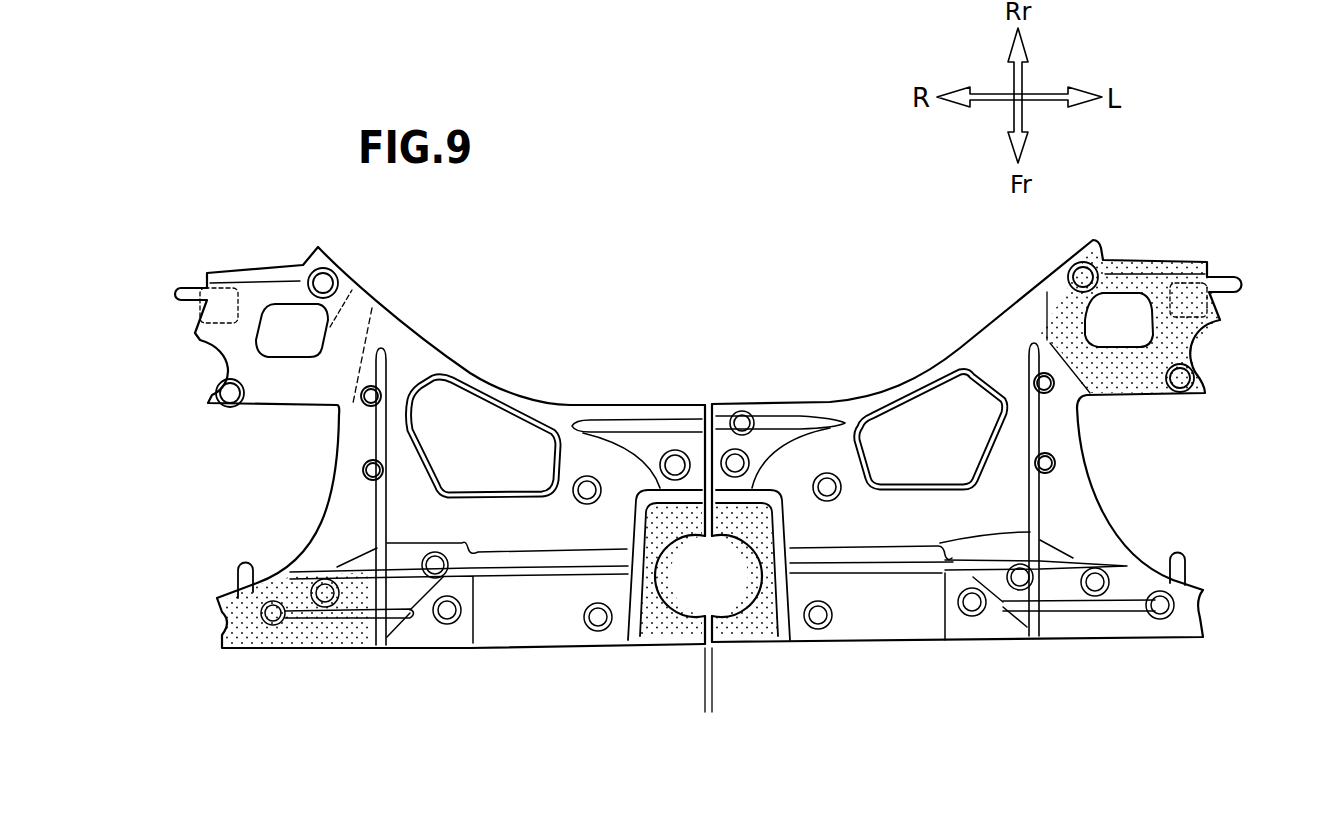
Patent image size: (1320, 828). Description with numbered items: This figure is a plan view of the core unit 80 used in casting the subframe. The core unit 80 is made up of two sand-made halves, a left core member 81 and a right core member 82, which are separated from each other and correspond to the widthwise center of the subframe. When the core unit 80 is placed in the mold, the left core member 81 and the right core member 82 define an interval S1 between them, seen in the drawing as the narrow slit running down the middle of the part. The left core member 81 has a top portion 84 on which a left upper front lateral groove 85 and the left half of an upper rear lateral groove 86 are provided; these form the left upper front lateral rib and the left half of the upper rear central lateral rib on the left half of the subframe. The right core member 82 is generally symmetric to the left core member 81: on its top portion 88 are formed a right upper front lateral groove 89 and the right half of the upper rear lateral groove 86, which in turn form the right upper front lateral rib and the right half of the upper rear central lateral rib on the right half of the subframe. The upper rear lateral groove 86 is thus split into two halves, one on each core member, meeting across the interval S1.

The core unit 80 is at (932, 253).
The left core member 81 is at (897, 378).
The right core member 82 is at (528, 388).
The top portion of the left core member 84 is at (1000, 500).
The left upper front lateral groove 85 is at (863, 577).
The upper rear lateral groove 86 is at (649, 422).
The top portion of the right core member 88 is at (403, 495).
The right upper front lateral groove 89 is at (513, 575).
The interval S1 is at (728, 710).